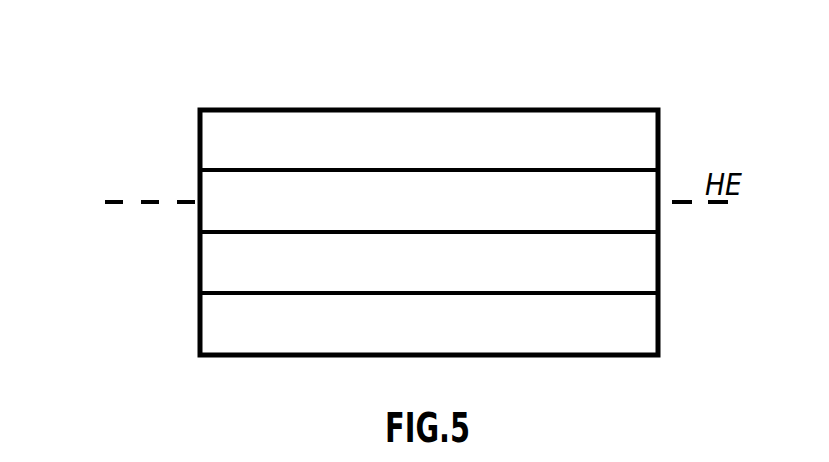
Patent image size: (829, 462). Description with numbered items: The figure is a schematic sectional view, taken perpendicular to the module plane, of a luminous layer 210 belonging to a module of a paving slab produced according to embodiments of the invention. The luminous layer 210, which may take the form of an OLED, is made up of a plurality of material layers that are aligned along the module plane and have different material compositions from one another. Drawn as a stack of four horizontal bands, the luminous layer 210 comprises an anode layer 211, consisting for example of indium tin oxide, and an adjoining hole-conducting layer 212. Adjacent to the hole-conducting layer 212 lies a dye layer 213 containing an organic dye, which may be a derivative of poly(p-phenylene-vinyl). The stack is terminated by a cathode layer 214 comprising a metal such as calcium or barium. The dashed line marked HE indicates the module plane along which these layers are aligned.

The luminous layer 210 is at (343, 178).
The anode layer 211 is at (371, 140).
The hole-conducting layer 212 is at (371, 194).
The dye layer 213 is at (371, 262).
The cathode layer 214 is at (371, 324).